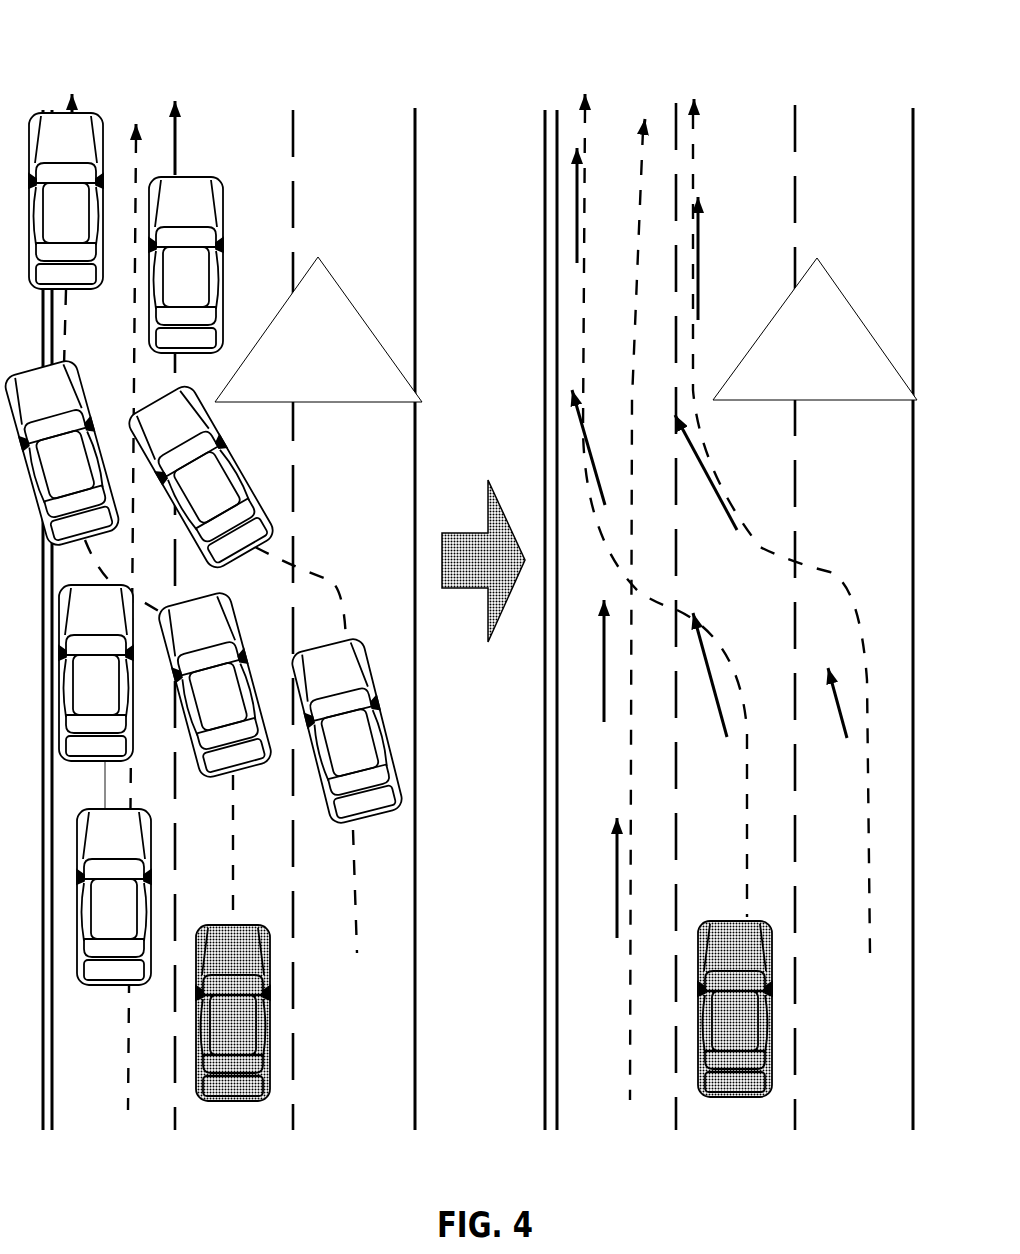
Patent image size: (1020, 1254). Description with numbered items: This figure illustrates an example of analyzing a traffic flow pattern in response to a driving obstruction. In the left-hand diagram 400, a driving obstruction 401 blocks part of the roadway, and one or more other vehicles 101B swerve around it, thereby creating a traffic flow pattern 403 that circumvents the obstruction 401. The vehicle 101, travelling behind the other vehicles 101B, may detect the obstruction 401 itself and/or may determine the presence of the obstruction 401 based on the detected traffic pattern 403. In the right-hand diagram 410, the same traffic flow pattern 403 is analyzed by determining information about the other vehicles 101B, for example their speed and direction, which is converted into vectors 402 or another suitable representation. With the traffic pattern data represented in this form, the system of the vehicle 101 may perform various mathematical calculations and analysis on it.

The diagram 400 is at (120, 92).
The diagram 410 is at (632, 93).
The driving obstruction 401 is at (302, 380).
The vectors 402 is at (583, 207).
The traffic flow pattern 403 is at (178, 134).
The vehicle 101 is at (484, 1011).
The other vehicles 101B is at (77, 671).